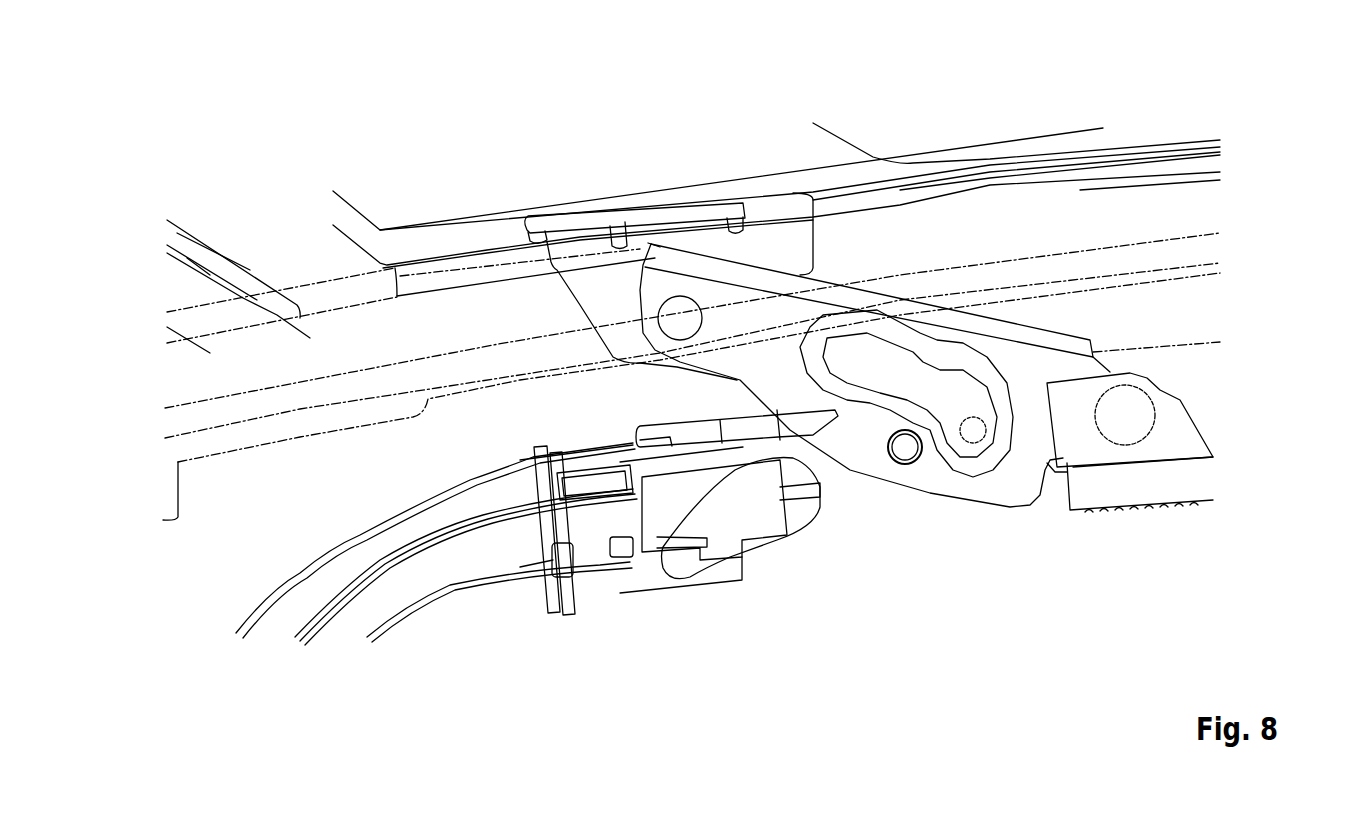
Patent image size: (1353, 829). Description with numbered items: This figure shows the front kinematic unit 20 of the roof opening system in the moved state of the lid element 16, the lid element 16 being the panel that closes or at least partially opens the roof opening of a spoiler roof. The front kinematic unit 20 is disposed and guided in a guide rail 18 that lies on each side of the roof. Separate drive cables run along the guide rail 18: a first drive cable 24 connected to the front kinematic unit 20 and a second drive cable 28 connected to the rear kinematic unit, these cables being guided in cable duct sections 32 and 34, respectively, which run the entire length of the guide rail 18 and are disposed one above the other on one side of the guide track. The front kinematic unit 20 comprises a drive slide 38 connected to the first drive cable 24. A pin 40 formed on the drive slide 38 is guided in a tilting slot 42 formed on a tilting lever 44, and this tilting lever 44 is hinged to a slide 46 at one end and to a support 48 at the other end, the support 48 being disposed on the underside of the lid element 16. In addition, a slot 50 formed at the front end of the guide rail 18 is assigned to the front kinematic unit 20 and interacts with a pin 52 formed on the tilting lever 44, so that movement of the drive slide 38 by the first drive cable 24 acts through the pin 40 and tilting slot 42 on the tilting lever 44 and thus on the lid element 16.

The lid element 16 is at (428, 232).
The support 48 is at (583, 248).
The drive slide 38 is at (1185, 356).
The cable duct section 32 is at (553, 458).
The first drive cable 24 is at (365, 540).
The second drive cable 28 is at (388, 608).
The cable duct section 34 is at (591, 561).
The guide rail 18 is at (644, 612).
The slot 50 is at (687, 563).
The front kinematic unit 20 is at (787, 612).
The tilting slot 42 is at (866, 378).
The pin 52 is at (901, 450).
The pin 40 is at (972, 432).
The tilting lever 44 is at (1020, 484).
The slide 46 is at (1150, 494).